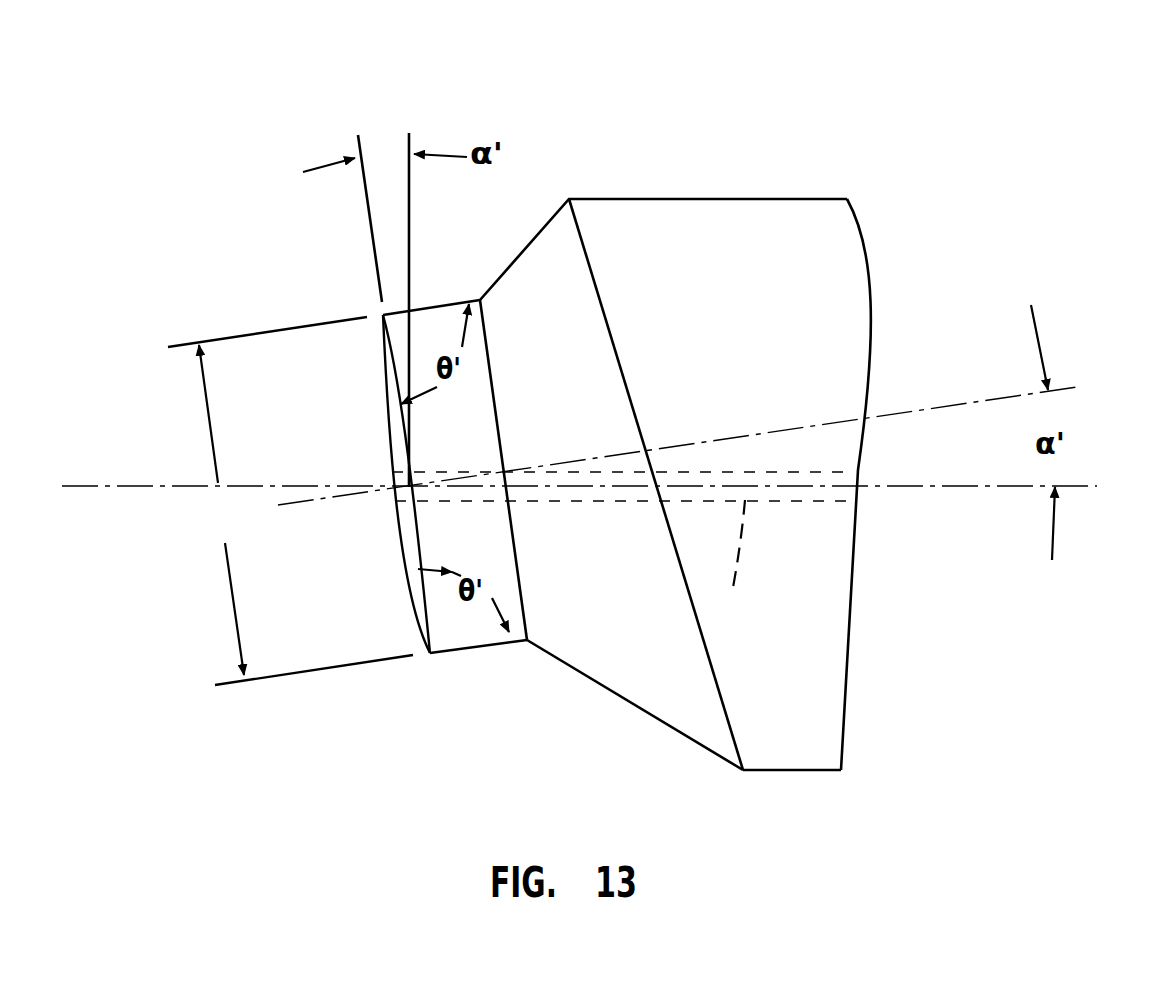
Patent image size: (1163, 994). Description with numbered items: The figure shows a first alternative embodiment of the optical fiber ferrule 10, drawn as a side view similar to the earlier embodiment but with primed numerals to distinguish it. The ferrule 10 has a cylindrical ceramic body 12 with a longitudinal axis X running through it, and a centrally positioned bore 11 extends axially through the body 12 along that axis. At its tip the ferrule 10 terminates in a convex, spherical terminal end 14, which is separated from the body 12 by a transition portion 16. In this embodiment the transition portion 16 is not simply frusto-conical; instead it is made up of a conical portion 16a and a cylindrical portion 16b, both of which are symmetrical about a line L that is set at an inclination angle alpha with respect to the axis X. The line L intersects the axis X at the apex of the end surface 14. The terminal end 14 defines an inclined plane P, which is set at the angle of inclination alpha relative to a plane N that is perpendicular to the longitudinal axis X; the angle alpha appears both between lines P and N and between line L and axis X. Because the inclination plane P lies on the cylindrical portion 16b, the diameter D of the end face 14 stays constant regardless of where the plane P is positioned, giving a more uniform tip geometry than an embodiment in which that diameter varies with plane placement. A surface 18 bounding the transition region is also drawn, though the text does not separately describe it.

The ferrule 10 is at (604, 416).
The bore 11 is at (732, 564).
The cylindrical ceramic body 12 is at (810, 220).
The terminal end 14 is at (400, 525).
The transition portion 16 is at (660, 469).
The conical portion 16a is at (650, 680).
The cylindrical portion 16b is at (475, 650).
The reflecting face (18') 18 is at (597, 292).
The longitudinal axis X is at (581, 486).
The line L is at (787, 427).
The plane N is at (409, 240).
The inclined plane P is at (368, 220).
The diameter D is at (290, 501).